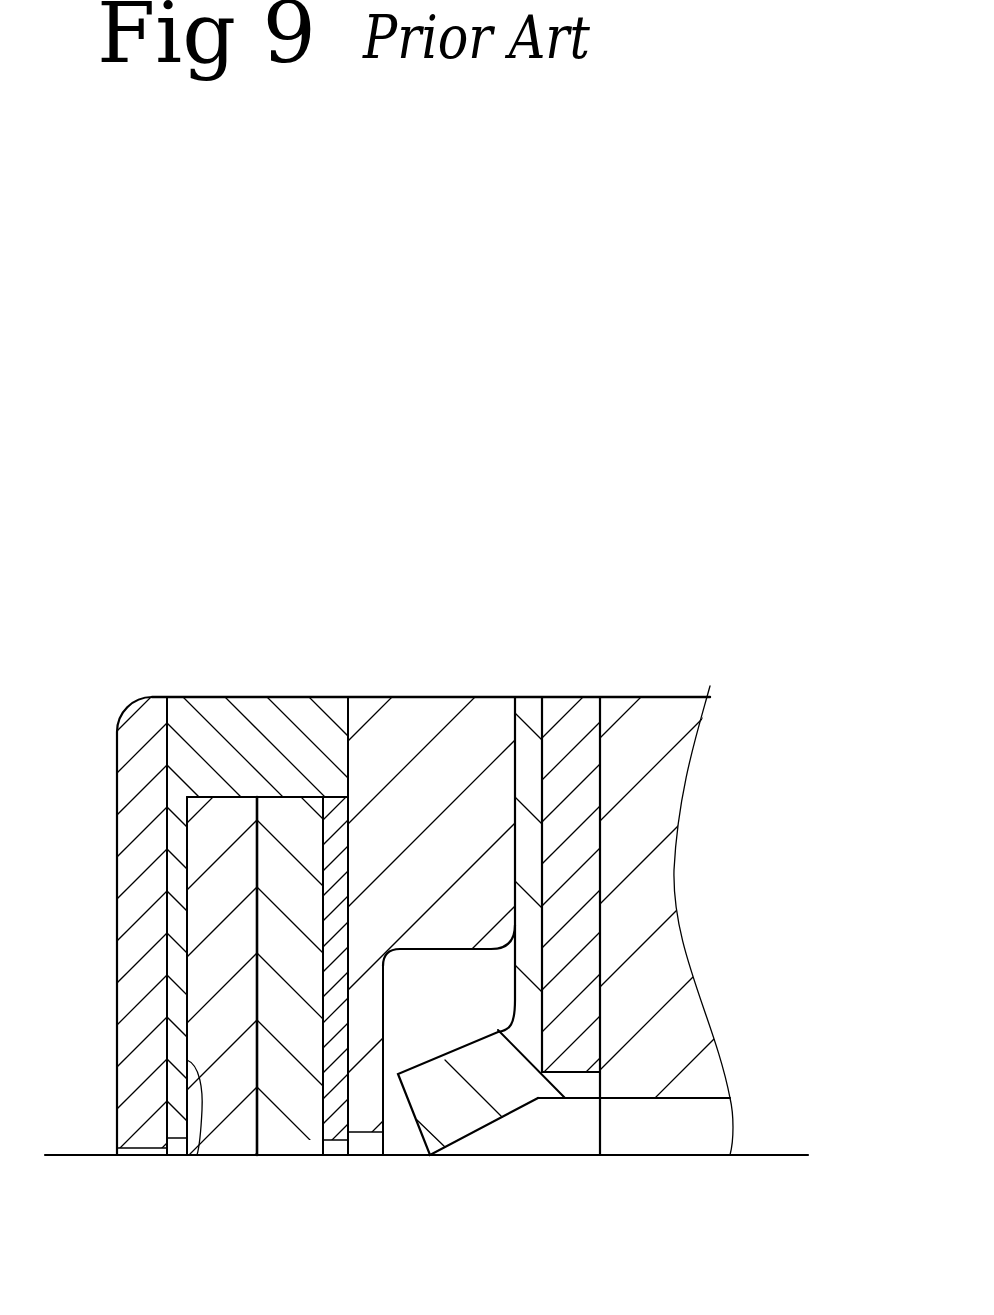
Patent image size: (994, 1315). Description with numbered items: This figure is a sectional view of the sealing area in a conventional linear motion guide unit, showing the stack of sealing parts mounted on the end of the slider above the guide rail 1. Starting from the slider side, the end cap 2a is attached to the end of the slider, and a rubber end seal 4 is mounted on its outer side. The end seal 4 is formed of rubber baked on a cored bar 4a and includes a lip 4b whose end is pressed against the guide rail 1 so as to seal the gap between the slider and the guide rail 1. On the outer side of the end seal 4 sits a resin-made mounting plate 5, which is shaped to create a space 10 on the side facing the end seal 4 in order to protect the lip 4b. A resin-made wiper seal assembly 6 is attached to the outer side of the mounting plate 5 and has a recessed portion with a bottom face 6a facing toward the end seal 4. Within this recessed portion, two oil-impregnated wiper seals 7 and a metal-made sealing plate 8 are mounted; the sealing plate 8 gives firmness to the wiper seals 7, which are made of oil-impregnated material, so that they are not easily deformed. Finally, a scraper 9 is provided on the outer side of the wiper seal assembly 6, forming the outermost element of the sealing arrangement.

The guide rail 1 is at (753, 1170).
The end cap 2a is at (648, 712).
The end seal 4 is at (499, 930).
The cored bar 4a is at (563, 1060).
The lip 4b is at (472, 1113).
The mounting plate 5 is at (420, 715).
The wiper seal assembly 6 is at (379, 932).
The bottom face 6a is at (197, 1140).
The wiper seals 7 is at (290, 1135).
The sealing plate 8 is at (310, 1135).
The scraper 9 is at (130, 1010).
The space 10 is at (403, 1033).